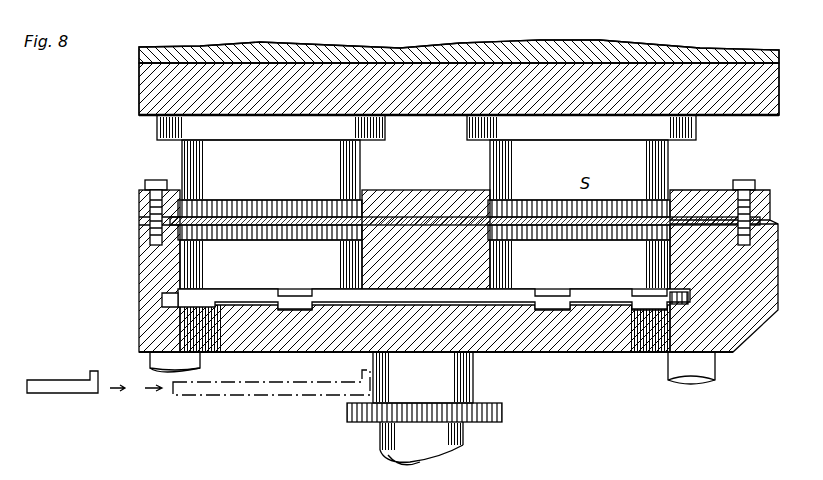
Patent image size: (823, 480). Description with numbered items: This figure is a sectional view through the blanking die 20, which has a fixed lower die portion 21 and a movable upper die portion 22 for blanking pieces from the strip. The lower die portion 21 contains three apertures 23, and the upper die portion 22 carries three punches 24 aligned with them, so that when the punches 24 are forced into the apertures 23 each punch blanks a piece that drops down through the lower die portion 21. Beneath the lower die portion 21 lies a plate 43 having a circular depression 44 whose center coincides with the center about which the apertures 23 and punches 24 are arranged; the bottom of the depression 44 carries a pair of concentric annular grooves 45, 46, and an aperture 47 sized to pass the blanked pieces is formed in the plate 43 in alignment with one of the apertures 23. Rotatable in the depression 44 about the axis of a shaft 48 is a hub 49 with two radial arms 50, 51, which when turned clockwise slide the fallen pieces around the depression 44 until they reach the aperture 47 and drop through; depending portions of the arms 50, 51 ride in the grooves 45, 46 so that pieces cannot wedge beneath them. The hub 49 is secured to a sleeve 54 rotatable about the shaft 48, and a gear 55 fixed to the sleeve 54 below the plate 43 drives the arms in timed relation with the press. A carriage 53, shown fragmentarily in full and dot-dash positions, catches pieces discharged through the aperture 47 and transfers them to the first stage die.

The blanking die 20 is at (97, 161).
The fixed lower die portion 21 is at (146, 268).
The movable upper die portion 22 is at (150, 93).
The apertures 23 is at (180, 267).
The punches 24 is at (523, 168).
The plate 43 is at (556, 338).
The circular depression 44 is at (685, 308).
The annular groove 45 is at (284, 300).
The annular groove 46 is at (212, 298).
The aperture 47 is at (360, 335).
The shaft 48 is at (438, 465).
The hub 49 is at (428, 298).
The arm 50 is at (603, 290).
The arm 51 is at (270, 290).
The carriage 53 is at (63, 386).
The sleeve 54 is at (458, 378).
The gear 55 is at (354, 409).